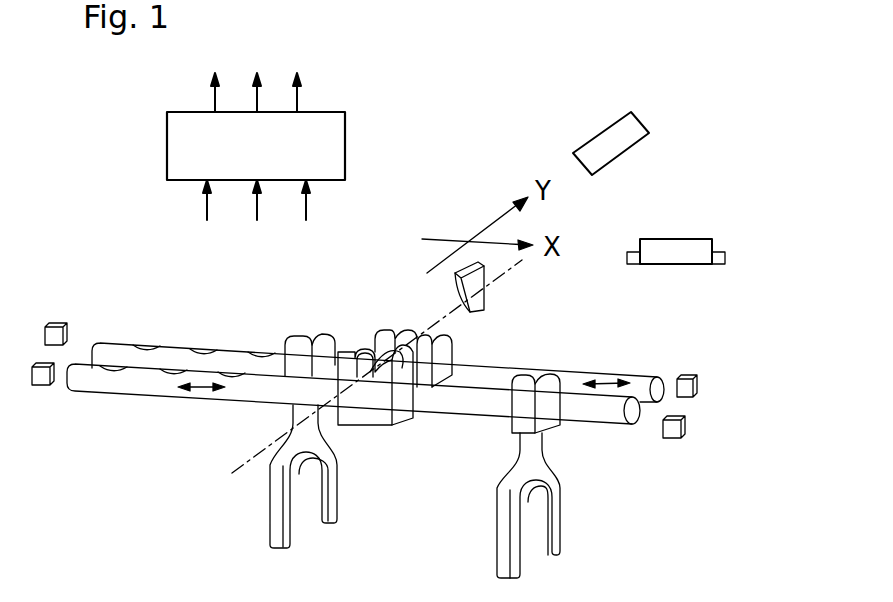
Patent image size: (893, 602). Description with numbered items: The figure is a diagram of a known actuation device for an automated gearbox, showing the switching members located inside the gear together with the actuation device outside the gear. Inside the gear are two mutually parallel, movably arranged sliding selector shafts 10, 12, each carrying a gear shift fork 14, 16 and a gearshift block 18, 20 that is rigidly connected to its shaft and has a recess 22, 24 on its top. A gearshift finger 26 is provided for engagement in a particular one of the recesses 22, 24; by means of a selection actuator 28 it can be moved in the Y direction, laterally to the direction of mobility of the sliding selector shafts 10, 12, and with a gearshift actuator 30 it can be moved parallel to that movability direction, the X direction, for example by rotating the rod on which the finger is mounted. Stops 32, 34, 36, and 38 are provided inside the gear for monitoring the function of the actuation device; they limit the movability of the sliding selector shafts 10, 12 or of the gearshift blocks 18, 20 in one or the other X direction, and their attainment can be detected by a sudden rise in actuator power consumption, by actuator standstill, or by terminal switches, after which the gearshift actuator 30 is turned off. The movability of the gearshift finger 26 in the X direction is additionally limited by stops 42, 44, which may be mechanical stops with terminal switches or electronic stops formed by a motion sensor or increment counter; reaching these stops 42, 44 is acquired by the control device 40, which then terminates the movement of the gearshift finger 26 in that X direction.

The sliding selector shaft 10 is at (505, 368).
The sliding selector shaft 12 is at (460, 405).
The gear shift fork 14 is at (327, 508).
The gear shift fork 16 is at (552, 538).
The gearshift block 18 is at (452, 343).
The gearshift block 20 is at (370, 400).
The recess 22 is at (398, 355).
The recess 24 is at (370, 372).
The gearshift finger 26 is at (478, 282).
The selection actuator 28 is at (625, 145).
The gearshift actuator 30 is at (677, 257).
The stop 32 is at (697, 385).
The stop 34 is at (54, 330).
The stop 36 is at (673, 438).
The stop 38 is at (41, 385).
The control device 40 is at (272, 158).
The stop 42 is at (632, 262).
The stop 44 is at (725, 257).